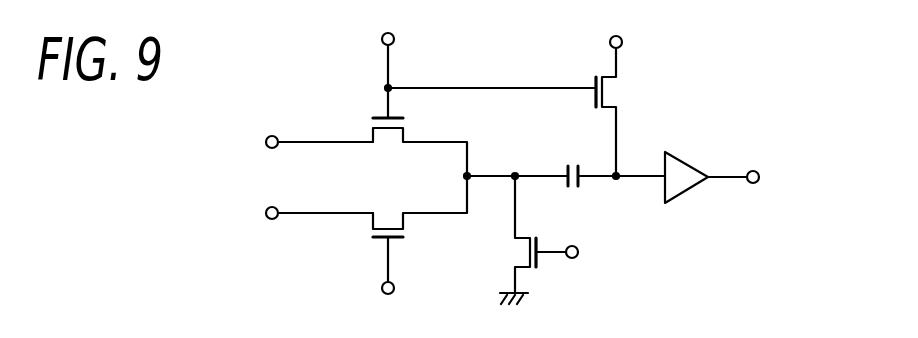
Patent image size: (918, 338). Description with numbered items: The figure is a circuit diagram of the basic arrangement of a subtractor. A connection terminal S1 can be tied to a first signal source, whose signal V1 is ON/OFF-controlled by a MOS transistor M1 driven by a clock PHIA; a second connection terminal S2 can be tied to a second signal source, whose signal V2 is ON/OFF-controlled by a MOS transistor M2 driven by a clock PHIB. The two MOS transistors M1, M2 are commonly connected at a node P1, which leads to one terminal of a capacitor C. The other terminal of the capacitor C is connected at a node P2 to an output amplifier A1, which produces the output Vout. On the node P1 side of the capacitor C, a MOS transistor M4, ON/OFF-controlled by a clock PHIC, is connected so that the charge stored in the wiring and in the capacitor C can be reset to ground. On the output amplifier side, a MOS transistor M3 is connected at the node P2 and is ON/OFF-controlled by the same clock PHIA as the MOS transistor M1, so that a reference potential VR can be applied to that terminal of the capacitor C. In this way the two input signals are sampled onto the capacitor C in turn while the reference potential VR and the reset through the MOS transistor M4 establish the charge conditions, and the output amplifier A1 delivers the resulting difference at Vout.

The connection terminal S1 is at (316, 125).
The connection terminal S2 is at (318, 198).
The first input voltage V1 is at (242, 144).
The second input voltage V2 is at (242, 214).
The MOS transistor M1 is at (420, 110).
The MOS transistor M2 is at (420, 229).
The MOS transistor M3 is at (518, 112).
The MOS transistor M4 is at (533, 240).
The capacitor C is at (616, 163).
The output amplifier A1 is at (706, 162).
The node P1 is at (470, 171).
The node P2 is at (618, 171).
The clock PHIA is at (389, 47).
The clock PHIB is at (389, 305).
The clock PHIC is at (590, 254).
The reference potential VR is at (615, 29).
The output terminal Vout is at (780, 181).